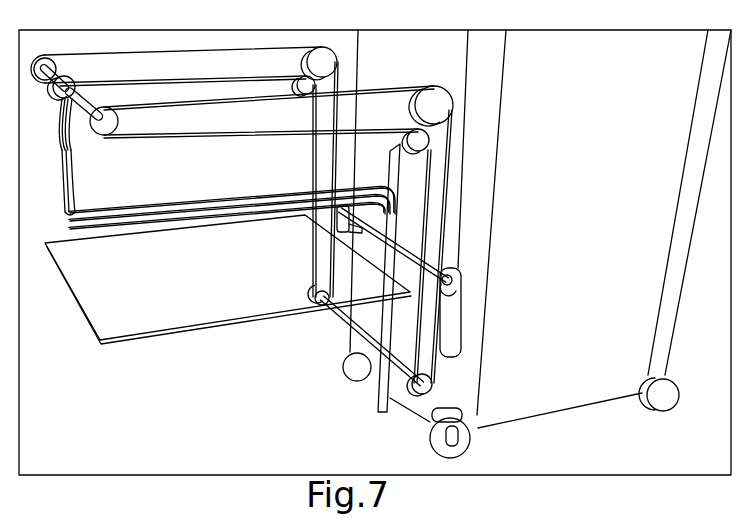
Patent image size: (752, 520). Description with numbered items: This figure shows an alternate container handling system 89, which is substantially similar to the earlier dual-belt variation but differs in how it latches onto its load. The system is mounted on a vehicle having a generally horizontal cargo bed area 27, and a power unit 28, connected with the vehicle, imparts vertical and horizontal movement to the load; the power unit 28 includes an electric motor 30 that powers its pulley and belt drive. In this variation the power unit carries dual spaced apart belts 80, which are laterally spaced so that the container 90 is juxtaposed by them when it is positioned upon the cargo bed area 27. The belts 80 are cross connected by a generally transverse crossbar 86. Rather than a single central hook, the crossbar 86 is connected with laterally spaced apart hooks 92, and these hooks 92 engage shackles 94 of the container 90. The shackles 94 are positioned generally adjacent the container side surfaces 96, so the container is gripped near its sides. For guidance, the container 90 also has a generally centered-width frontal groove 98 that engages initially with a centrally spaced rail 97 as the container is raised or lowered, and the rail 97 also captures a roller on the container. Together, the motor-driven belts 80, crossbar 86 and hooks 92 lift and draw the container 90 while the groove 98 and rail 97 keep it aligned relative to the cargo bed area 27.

The cargo bed area 27 is at (198, 313).
The power unit 28 is at (50, 97).
The electric motor 30 is at (71, 77).
The dual belts 80 is at (195, 136).
The crossbar 86 is at (402, 248).
The container handling system 89 is at (92, 43).
The container 90 is at (565, 405).
The hooks 92 is at (452, 296).
The shackles 94 is at (451, 276).
The container side surfaces 96 is at (471, 216).
The centrally spaced rail 97 is at (168, 203).
The frontal groove 98 is at (393, 173).